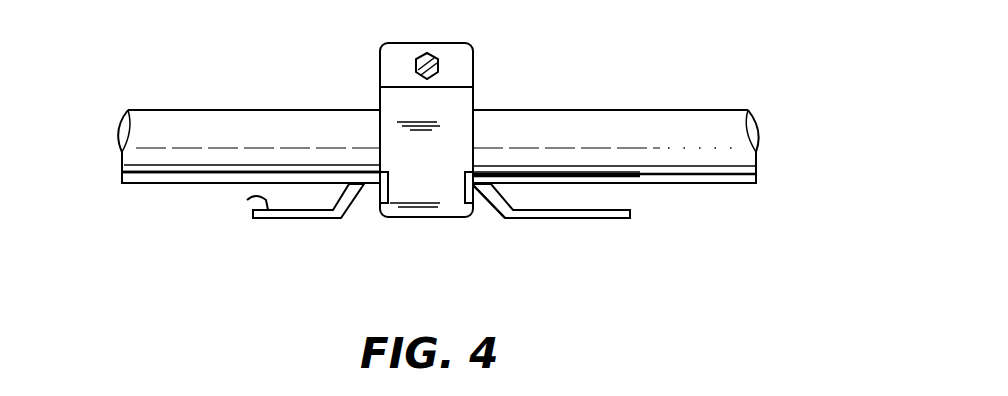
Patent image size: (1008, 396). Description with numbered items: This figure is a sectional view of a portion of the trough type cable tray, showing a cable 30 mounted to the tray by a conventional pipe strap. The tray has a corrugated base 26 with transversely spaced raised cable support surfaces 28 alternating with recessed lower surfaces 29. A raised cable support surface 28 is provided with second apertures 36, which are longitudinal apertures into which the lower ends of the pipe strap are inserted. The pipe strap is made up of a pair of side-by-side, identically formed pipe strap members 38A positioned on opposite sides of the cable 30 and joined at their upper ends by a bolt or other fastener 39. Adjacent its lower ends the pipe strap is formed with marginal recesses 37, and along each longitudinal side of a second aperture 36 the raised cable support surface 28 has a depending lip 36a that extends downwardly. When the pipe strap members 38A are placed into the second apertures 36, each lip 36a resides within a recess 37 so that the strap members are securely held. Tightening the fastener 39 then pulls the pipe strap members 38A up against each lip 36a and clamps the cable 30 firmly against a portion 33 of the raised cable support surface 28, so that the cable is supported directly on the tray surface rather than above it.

The corrugated base 26 is at (247, 200).
The raised cable support surface 28 is at (362, 194).
The recessed lower surface 29 is at (540, 218).
The cable 30 is at (690, 171).
The portion of raised cable support surface 33 is at (503, 178).
The second aperture 36 is at (477, 172).
The depending lip 36a is at (477, 194).
The marginal recess 37 is at (376, 172).
The pipe strap member 38A is at (440, 110).
The fastener 39 is at (424, 55).